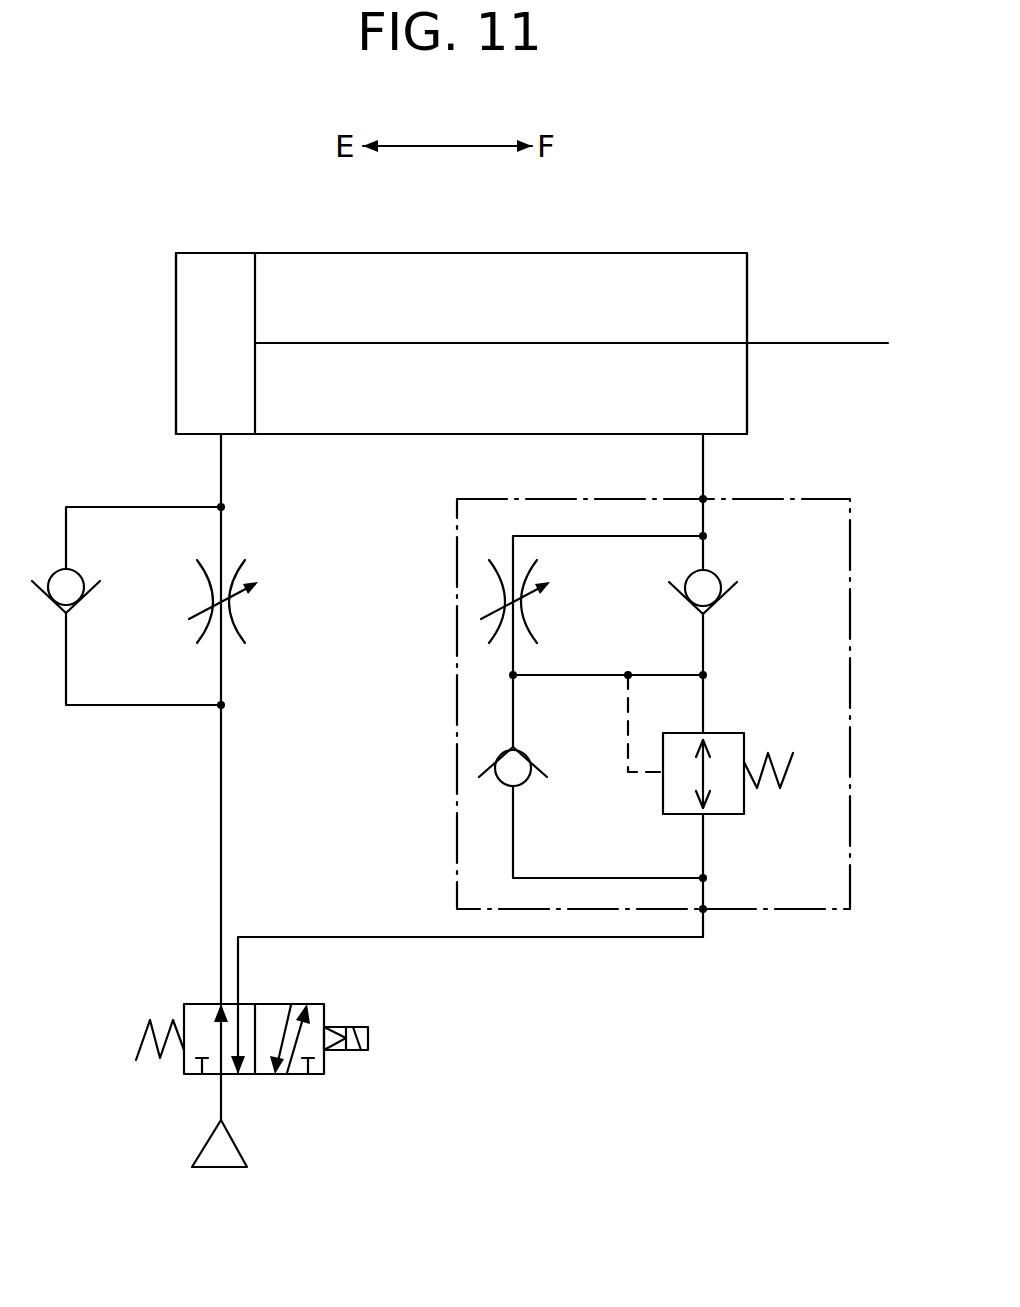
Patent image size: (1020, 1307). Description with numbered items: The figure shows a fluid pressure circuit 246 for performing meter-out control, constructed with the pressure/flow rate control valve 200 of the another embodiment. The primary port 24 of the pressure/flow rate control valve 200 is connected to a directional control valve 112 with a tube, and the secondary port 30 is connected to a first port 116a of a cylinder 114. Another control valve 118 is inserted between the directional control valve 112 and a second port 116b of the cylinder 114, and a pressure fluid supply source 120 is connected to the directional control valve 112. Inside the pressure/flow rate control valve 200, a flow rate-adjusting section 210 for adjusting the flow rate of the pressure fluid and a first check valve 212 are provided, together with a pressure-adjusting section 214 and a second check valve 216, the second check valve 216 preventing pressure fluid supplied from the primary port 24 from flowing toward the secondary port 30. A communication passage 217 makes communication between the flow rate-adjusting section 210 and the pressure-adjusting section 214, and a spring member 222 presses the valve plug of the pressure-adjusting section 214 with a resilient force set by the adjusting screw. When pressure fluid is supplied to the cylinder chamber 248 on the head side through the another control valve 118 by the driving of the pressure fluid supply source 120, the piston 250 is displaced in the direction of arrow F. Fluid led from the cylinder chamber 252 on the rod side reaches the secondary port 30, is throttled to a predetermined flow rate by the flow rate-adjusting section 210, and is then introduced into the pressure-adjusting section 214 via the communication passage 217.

The cylinder 114 is at (481, 252).
The cylinder chamber 248 is at (212, 290).
The piston 250 is at (257, 283).
The cylinder chamber 252 is at (717, 293).
The fluid pressure circuit 246 is at (697, 190).
The second port 116b is at (223, 435).
The first port 116a is at (700, 440).
The secondary port 30 is at (773, 485).
The another control valve 118 is at (133, 719).
The pressure/flow rate control valve 200 is at (852, 597).
The flow rate-adjusting section 210 is at (532, 613).
The first check valve 212 is at (717, 572).
The communication passage 217 is at (515, 678).
The pressure-adjusting section 214 is at (728, 733).
The second check valve 216 is at (528, 780).
The spring member 222 is at (793, 753).
The primary port 24 is at (703, 909).
The directional control valve 112 is at (329, 1079).
The pressure fluid supply source 120 is at (243, 1157).